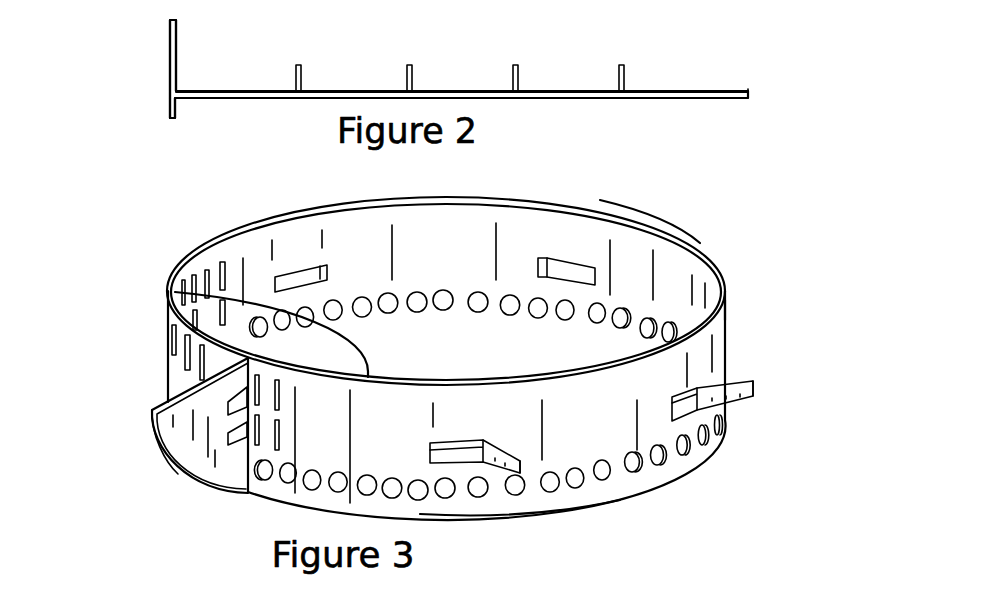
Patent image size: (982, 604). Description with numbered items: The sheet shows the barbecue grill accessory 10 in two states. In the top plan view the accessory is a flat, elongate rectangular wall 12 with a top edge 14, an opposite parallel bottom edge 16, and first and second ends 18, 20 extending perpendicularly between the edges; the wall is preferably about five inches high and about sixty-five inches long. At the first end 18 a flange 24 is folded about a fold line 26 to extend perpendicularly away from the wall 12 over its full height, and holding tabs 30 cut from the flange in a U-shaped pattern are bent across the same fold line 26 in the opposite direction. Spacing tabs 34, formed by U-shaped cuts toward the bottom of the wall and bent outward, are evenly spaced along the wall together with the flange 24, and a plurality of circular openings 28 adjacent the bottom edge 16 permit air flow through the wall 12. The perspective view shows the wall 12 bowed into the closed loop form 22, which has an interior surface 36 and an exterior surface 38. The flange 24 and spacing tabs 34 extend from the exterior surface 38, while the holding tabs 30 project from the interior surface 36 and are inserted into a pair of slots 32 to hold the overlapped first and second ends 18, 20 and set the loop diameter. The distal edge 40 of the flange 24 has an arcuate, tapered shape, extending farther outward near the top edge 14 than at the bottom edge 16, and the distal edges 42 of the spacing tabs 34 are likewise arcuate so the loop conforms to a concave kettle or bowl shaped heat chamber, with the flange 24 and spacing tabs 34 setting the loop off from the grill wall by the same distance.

In FIG. 2, the barbecue grill accessory 10 is at (153, 134).
In FIG. 3, the barbecue grill accessory 10 is at (718, 234).
In FIG. 2, the wall 12 is at (360, 91).
In FIG. 3, the wall 12 is at (557, 228).
In FIG. 2, the top edge 14 is at (472, 91).
In FIG. 3, the top edge 14 is at (504, 228).
In FIG. 3, the bottom edge 16 is at (573, 508).
In FIG. 2, the first end 18 is at (170, 77).
In FIG. 3, the first end 18 is at (172, 387).
In FIG. 2, the second end 20 is at (750, 94).
In FIG. 3, the second end 20 is at (370, 373).
In FIG. 3, the loop form 22 is at (647, 196).
In FIG. 2, the flange 24 is at (170, 45).
In FIG. 3, the flange 24 is at (185, 446).
In FIG. 2, the fold line 26 is at (177, 91).
In FIG. 3, the fold line 26 is at (258, 456).
In FIG. 3, the circular openings 28 is at (663, 462).
In FIG. 2, the holding tabs 30 is at (176, 117).
In FIG. 3, the slots 32 is at (165, 340).
In FIG. 2, the spacing tabs 34 is at (302, 79).
In FIG. 3, the spacing tabs 34 is at (512, 440).
In FIG. 3, the interior surface 36 is at (345, 228).
In FIG. 3, the exterior surface 38 is at (168, 318).
In FIG. 3, the distal edge of the flange 40 is at (177, 470).
In FIG. 3, the distal edges of the spacing tabs 42 is at (756, 390).